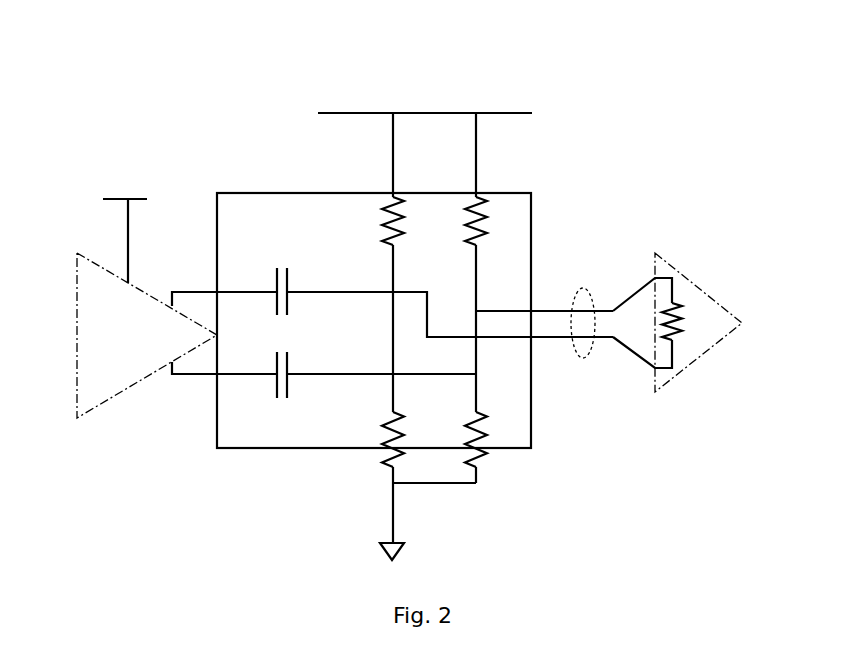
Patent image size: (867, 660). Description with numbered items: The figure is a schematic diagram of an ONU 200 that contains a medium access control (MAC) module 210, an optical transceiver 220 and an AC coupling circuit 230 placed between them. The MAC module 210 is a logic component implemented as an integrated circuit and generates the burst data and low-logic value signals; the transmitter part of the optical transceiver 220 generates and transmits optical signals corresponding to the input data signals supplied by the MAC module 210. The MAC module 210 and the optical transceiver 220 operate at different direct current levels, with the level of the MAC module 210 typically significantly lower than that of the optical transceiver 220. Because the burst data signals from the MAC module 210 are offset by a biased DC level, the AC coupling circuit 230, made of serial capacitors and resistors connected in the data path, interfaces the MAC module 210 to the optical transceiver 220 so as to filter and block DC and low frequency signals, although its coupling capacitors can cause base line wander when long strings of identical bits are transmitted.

The ONU 200 is at (407, 38).
The medium access control (MAC) module 210 is at (77, 360).
The optical transceiver 220 is at (654, 390).
The AC coupling circuit 230 is at (214, 430).